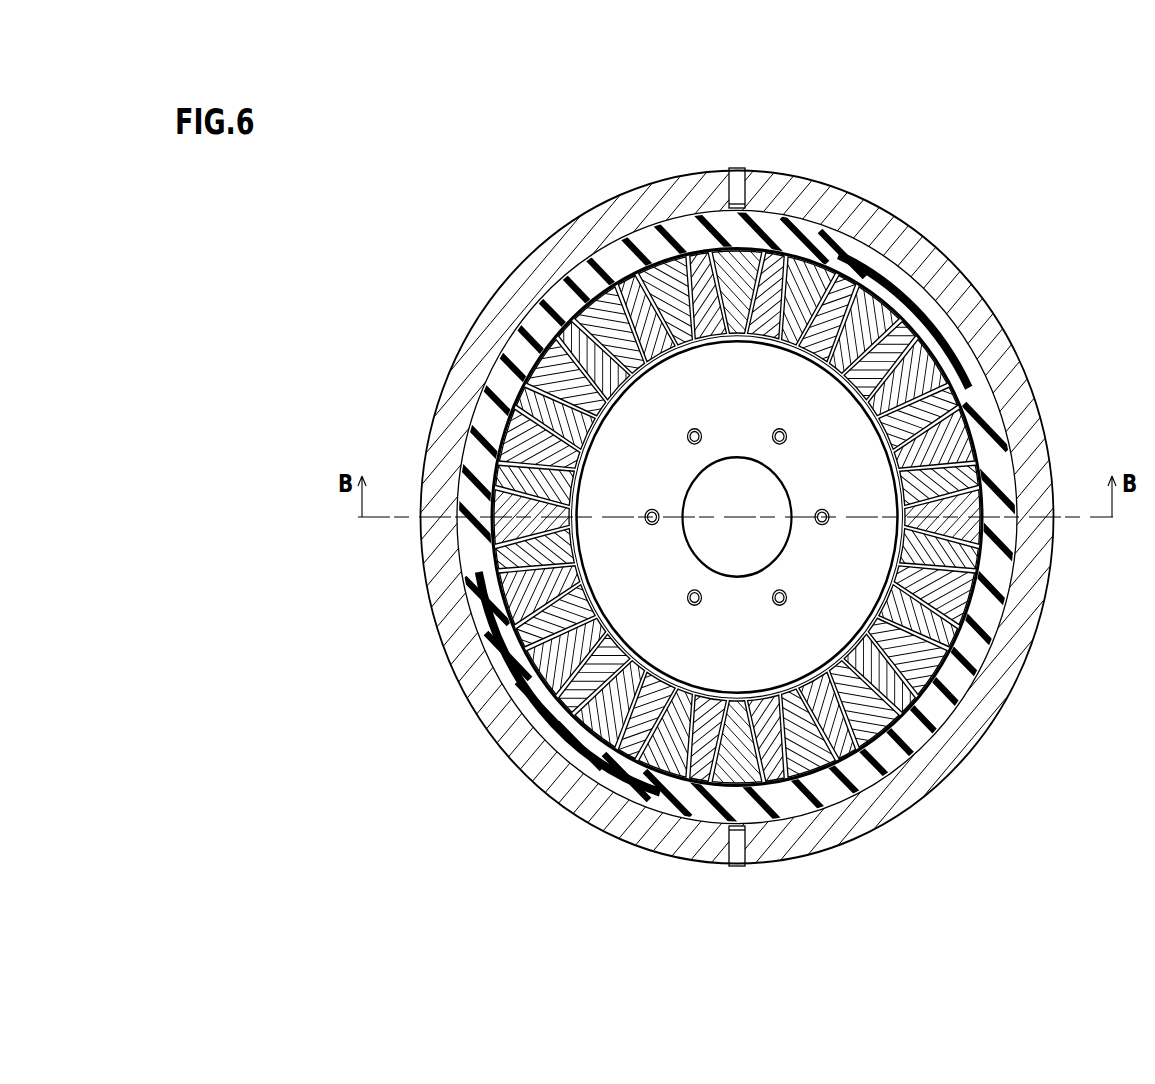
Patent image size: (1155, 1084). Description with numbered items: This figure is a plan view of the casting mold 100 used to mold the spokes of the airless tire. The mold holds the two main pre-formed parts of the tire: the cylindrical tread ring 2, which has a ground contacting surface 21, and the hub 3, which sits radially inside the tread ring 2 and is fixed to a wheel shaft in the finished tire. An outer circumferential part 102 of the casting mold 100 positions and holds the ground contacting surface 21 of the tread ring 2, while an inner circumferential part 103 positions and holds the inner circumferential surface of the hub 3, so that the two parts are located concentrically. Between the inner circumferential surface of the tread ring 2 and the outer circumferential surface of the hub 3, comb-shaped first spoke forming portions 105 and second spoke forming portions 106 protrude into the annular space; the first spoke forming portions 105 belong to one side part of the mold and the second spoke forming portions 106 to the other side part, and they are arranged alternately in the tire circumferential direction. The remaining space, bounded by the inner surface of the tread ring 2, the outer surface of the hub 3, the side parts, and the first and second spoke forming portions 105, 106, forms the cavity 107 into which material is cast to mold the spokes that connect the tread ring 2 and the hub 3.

The casting mold 100 is at (1048, 281).
The tread ring 2 is at (858, 264).
The ground contacting surface 21 is at (965, 690).
The outer circumferential part 102 is at (1020, 605).
The hub 3 is at (652, 398).
The inner circumferential part 103 is at (725, 556).
The first spoke forming portions 105 is at (515, 520).
The second spoke forming portions 106 is at (938, 480).
The cavity 107 is at (775, 290).